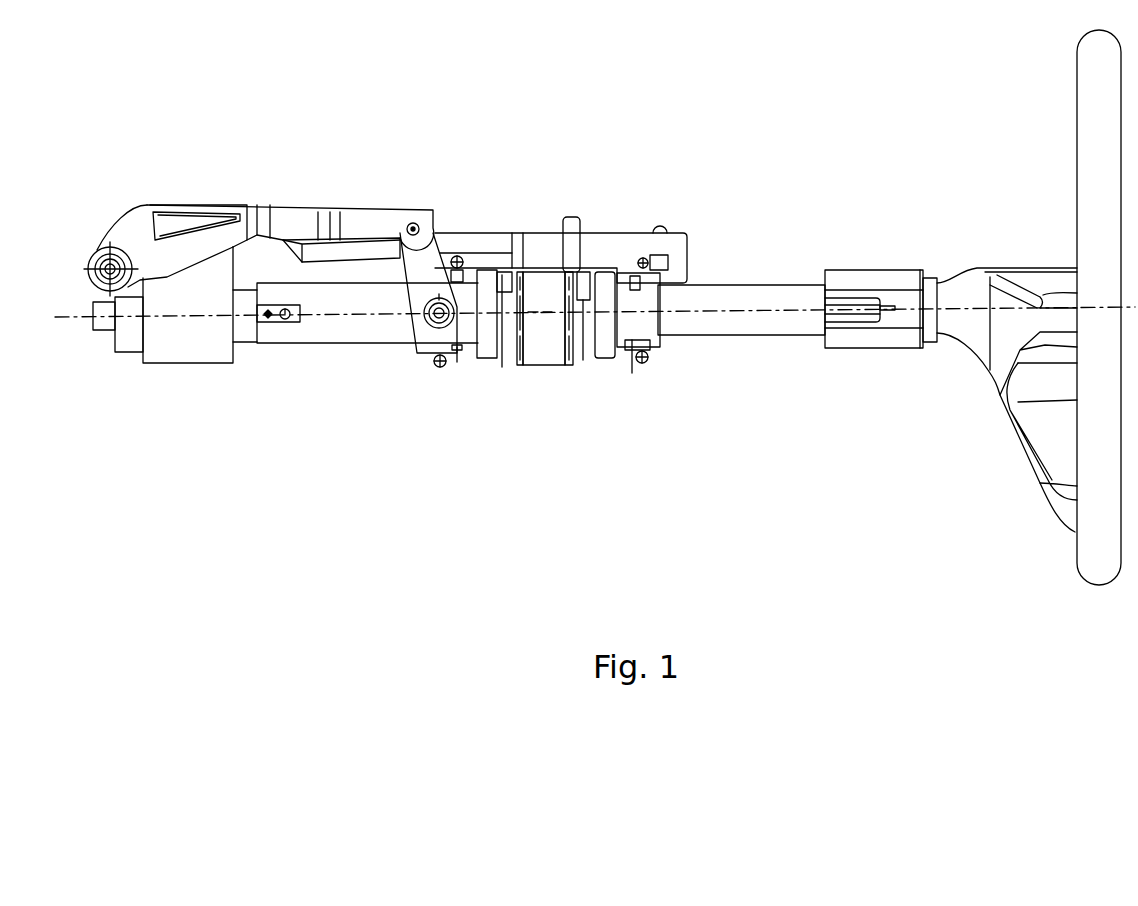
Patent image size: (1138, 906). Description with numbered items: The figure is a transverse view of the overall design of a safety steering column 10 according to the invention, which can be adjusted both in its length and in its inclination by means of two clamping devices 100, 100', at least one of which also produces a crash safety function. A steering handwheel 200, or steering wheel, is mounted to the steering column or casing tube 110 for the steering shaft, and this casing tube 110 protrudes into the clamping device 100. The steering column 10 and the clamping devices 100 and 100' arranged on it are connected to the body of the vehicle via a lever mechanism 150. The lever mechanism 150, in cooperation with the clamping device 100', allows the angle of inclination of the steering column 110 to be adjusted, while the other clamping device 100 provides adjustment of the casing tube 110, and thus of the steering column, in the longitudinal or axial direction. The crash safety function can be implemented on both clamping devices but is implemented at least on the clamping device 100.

The safety steering column 10 is at (823, 587).
The clamping device 100 is at (615, 355).
The clamping device 100' is at (525, 355).
The casing tube 110 is at (730, 297).
The lever mechanism 150 is at (373, 222).
The steering handwheel 200 is at (1087, 87).